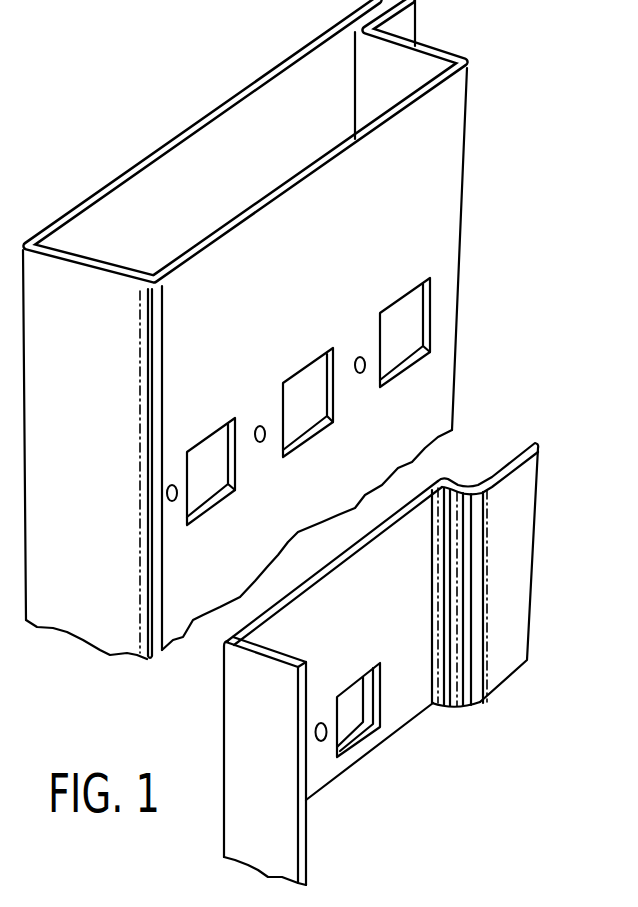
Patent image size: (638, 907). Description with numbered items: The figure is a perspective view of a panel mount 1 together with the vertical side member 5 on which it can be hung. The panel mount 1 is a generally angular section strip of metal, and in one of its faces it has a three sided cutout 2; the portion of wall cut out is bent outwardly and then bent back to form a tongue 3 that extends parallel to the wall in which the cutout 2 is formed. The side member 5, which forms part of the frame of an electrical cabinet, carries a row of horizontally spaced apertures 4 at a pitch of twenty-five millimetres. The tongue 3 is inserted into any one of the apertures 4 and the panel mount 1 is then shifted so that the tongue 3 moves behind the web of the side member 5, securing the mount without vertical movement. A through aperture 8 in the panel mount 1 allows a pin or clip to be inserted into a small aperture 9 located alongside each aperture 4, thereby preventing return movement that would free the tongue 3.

The panel mount 1 is at (510, 630).
The three sided cutout 2 is at (372, 669).
The tongue 3 is at (345, 712).
The apertures 4 is at (208, 453).
The vertical side member 5 is at (452, 139).
The through aperture 8 is at (314, 730).
The aperture 9 is at (175, 501).